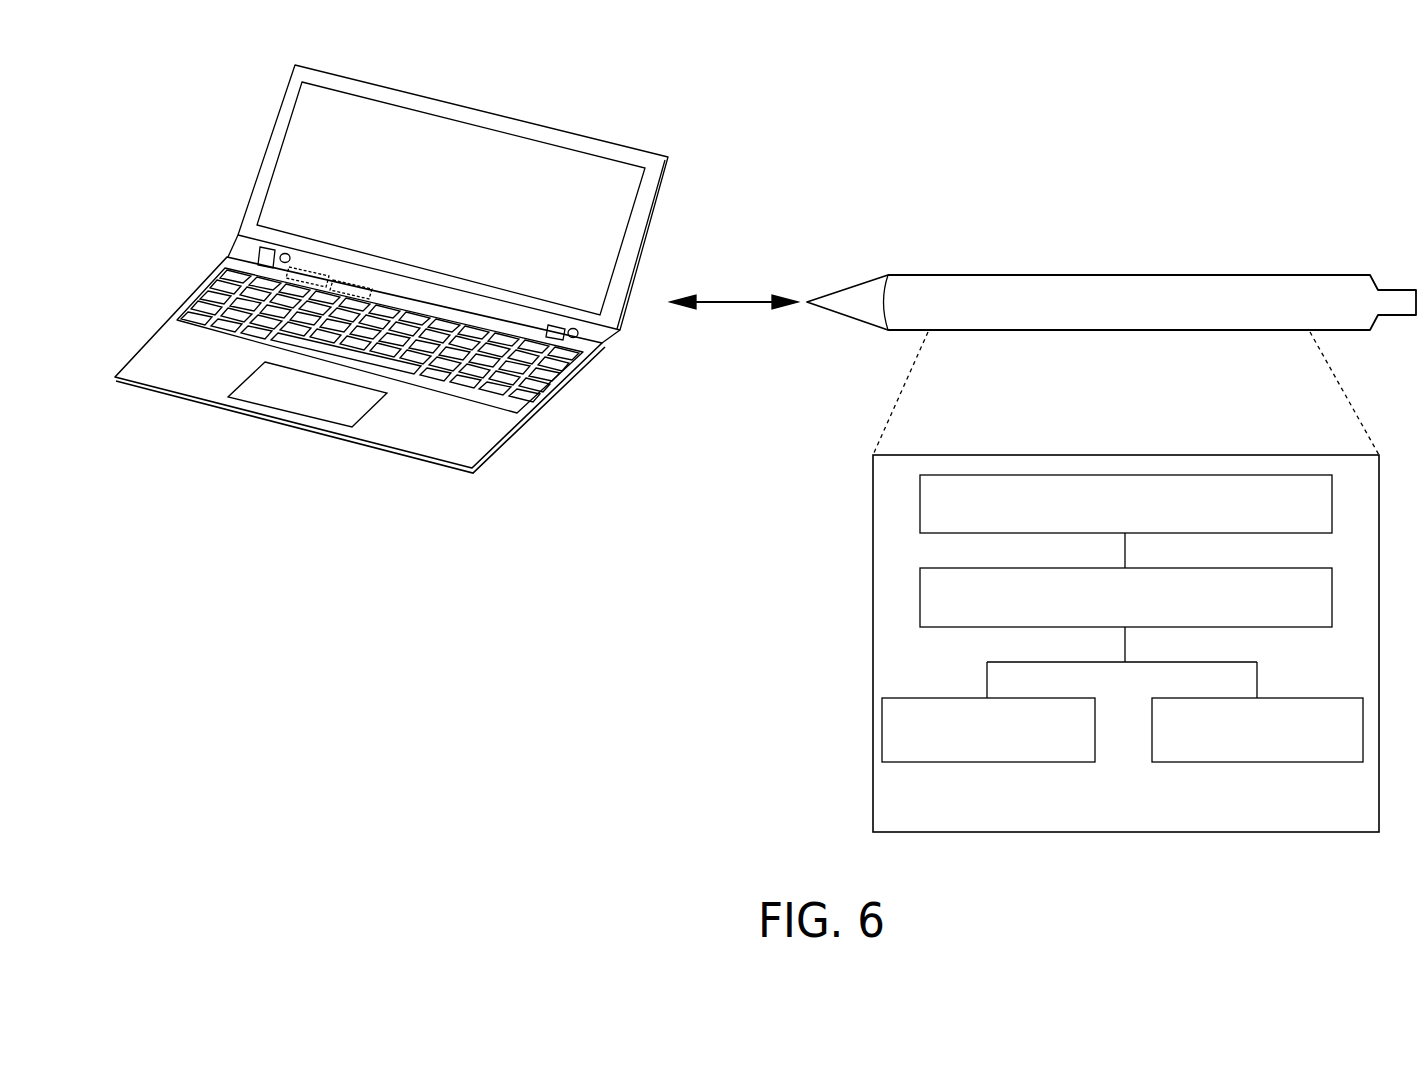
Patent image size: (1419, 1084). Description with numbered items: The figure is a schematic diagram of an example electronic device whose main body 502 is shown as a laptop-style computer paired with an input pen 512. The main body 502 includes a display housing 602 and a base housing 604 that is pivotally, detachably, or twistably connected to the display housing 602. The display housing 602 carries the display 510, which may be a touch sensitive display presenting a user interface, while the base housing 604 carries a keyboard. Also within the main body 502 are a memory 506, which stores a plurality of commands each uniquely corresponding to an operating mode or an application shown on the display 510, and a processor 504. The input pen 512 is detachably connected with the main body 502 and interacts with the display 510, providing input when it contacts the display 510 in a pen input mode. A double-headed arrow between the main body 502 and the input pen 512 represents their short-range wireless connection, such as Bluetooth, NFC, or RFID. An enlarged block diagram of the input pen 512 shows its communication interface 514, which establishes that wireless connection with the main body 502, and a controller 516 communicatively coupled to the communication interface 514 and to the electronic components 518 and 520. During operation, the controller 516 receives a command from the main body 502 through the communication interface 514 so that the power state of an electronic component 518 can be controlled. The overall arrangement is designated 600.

The main body 502 is at (614, 124).
The display housing 602 is at (406, 91).
The display 510 is at (615, 203).
The base housing 604 is at (281, 419).
The memory 506 is at (316, 270).
The processor 504 is at (362, 281).
The input pen 512 is at (1197, 821).
The communication interface 514 is at (1288, 513).
The controller 516 is at (1211, 607).
The electronic component 518 is at (1071, 751).
The electronic component 520 is at (1338, 751).
The system 600 is at (1197, 852).